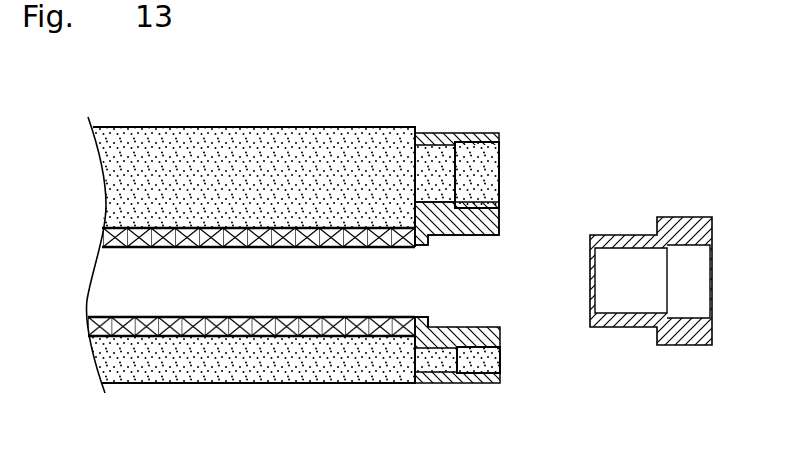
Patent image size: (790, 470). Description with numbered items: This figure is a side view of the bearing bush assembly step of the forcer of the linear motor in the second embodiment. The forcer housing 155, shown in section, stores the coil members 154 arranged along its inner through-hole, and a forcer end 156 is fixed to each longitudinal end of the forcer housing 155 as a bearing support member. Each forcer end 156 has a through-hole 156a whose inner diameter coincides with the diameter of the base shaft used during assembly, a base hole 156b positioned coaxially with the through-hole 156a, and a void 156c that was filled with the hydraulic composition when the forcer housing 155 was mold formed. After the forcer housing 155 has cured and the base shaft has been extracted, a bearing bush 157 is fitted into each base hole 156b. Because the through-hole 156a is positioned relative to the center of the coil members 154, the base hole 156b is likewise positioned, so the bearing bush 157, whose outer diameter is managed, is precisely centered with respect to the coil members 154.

The coil members 154 is at (148, 336).
The forcer housing 155 is at (228, 127).
The forcer ends 156 is at (496, 265).
The through-hole 156a is at (428, 317).
The base hole 156b is at (479, 238).
The void 156c is at (476, 145).
The bearing bushes 157 is at (684, 217).